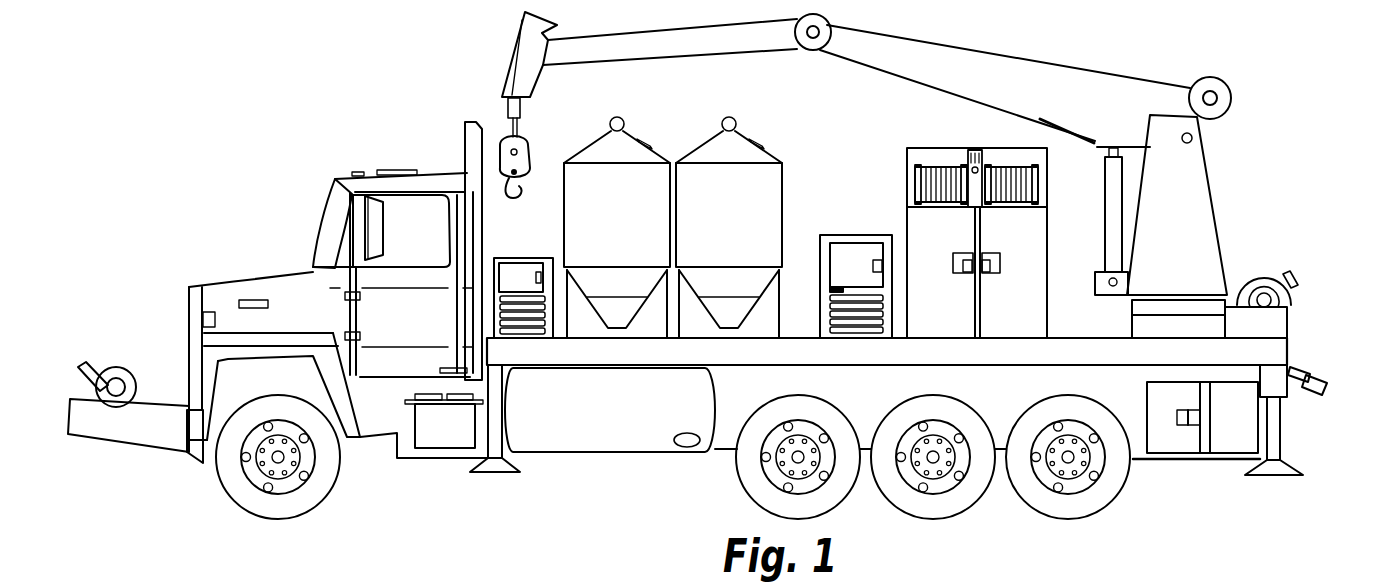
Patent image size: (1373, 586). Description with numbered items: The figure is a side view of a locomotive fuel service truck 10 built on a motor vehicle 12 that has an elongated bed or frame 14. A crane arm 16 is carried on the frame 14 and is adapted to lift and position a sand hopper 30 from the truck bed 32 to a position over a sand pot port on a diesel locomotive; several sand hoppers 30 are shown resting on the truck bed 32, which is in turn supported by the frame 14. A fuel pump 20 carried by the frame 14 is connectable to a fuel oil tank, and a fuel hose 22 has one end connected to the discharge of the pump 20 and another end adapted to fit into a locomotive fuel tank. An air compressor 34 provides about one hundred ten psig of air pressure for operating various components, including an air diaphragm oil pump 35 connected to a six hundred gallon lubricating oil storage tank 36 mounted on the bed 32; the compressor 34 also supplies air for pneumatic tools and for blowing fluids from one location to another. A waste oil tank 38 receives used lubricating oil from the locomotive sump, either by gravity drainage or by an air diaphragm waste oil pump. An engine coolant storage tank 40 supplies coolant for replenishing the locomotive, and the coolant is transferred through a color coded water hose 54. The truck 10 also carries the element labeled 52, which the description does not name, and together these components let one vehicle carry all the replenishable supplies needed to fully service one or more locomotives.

The locomotive fuel service truck 10 is at (1280, 143).
The motor vehicle 12 is at (324, 219).
The frame 14 is at (728, 418).
The crane arm 16 is at (982, 58).
The fuel pump 20 is at (828, 233).
The fuel hose 22 is at (119, 366).
The sand hopper 30 is at (634, 131).
The truck bed 32 is at (1263, 353).
The air compressor 34 is at (970, 150).
The air diaphragm oil pump 35 is at (1013, 280).
The lubricating oil storage tank 36 is at (1045, 208).
The waste oil tank 38 is at (567, 433).
The engine coolant storage tank 40 is at (912, 223).
The right winch reel 52 is at (1015, 167).
The water hose 54 is at (927, 167).